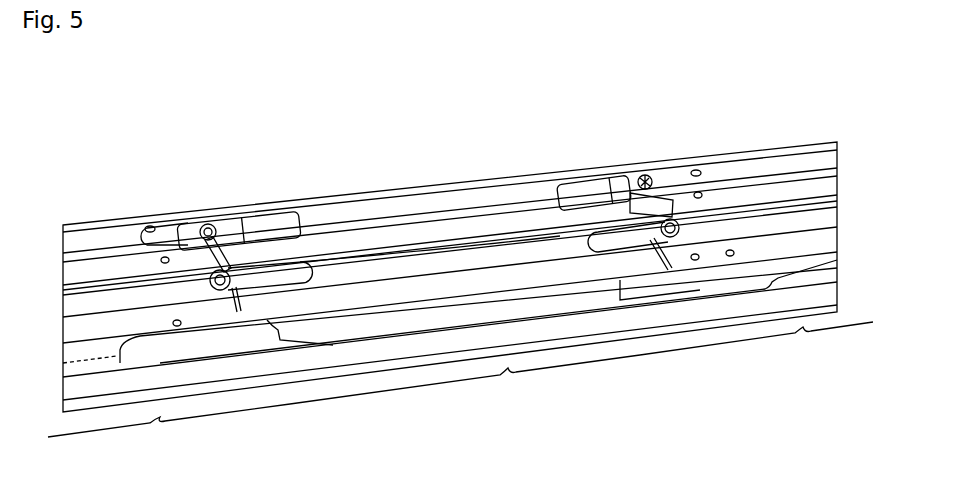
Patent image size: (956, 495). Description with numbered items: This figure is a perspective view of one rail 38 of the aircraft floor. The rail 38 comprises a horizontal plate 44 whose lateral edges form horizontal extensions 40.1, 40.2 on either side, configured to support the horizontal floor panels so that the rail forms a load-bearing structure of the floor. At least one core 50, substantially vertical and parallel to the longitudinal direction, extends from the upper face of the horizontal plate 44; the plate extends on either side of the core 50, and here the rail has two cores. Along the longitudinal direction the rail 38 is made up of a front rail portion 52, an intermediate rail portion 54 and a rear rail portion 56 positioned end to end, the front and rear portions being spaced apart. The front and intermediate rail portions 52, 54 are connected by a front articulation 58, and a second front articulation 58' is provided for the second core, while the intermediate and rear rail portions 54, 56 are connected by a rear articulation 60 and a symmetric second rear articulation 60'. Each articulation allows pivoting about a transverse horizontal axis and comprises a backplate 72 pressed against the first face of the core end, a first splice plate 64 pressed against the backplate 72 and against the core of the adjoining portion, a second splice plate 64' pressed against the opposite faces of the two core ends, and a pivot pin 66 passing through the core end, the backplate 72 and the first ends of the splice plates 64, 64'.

The rail 38 is at (415, 176).
The horizontal extension 40.1 is at (780, 148).
The horizontal extension 40.2 is at (838, 314).
The horizontal plate 44 is at (478, 253).
The core 50 is at (417, 253).
The front rail portion 52 is at (756, 341).
The intermediate rail portion 54 is at (465, 386).
The rear rail portion 56 is at (169, 428).
The front articulation 58 is at (630, 135).
The second front articulation 58' is at (661, 166).
The rear articulation 60 is at (225, 169).
The second rear articulation 60' is at (174, 202).
The splice plate 64 is at (404, 174).
The second splice plate 64' is at (448, 330).
The pivot pin 66 is at (222, 292).
The backplate 72 is at (147, 224).